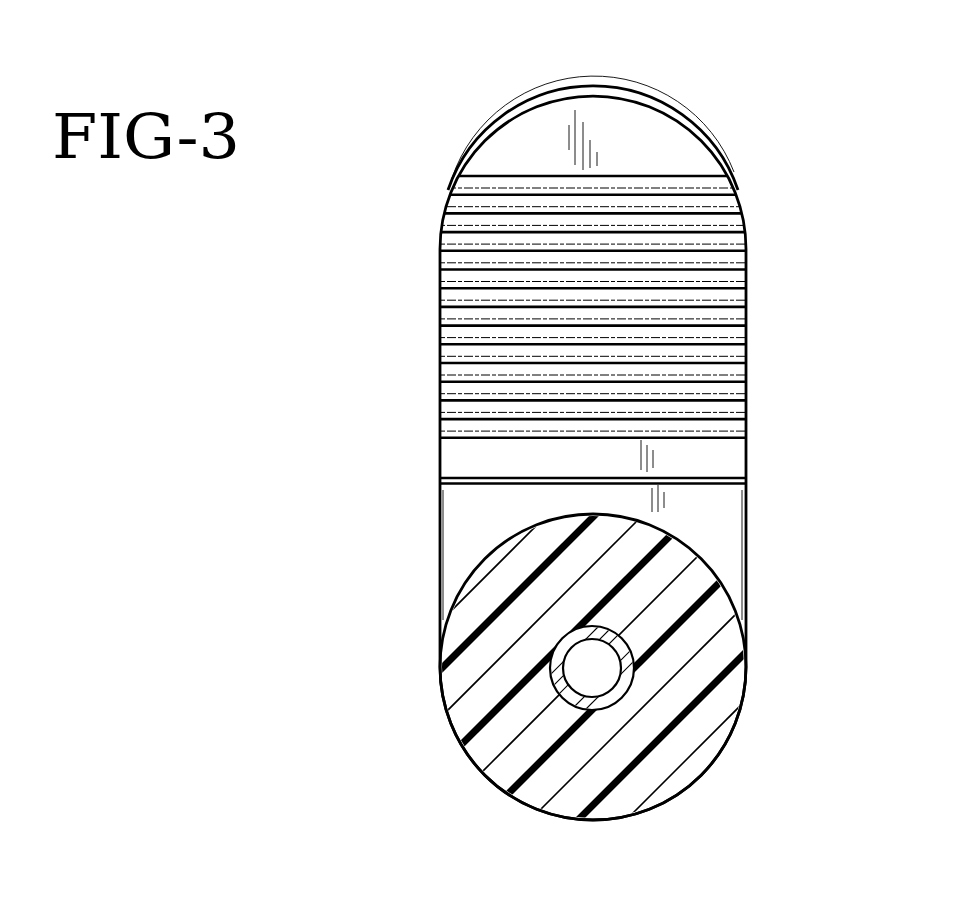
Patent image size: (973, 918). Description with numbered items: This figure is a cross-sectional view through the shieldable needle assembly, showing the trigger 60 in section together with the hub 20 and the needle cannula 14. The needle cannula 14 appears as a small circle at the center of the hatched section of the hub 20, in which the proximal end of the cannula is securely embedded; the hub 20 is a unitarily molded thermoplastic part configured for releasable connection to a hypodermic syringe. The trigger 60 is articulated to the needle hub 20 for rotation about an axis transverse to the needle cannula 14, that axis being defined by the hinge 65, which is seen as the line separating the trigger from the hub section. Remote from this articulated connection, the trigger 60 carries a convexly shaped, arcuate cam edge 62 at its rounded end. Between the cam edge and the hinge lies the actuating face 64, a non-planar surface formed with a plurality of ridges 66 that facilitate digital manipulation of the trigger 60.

The trigger 60 is at (749, 248).
The arcuate cam edge 62 is at (662, 138).
The actuating face 64 is at (457, 302).
The ridges 66 is at (733, 427).
The hinge 65 is at (453, 479).
The hub 20 is at (473, 702).
The needle cannula 14 is at (630, 685).